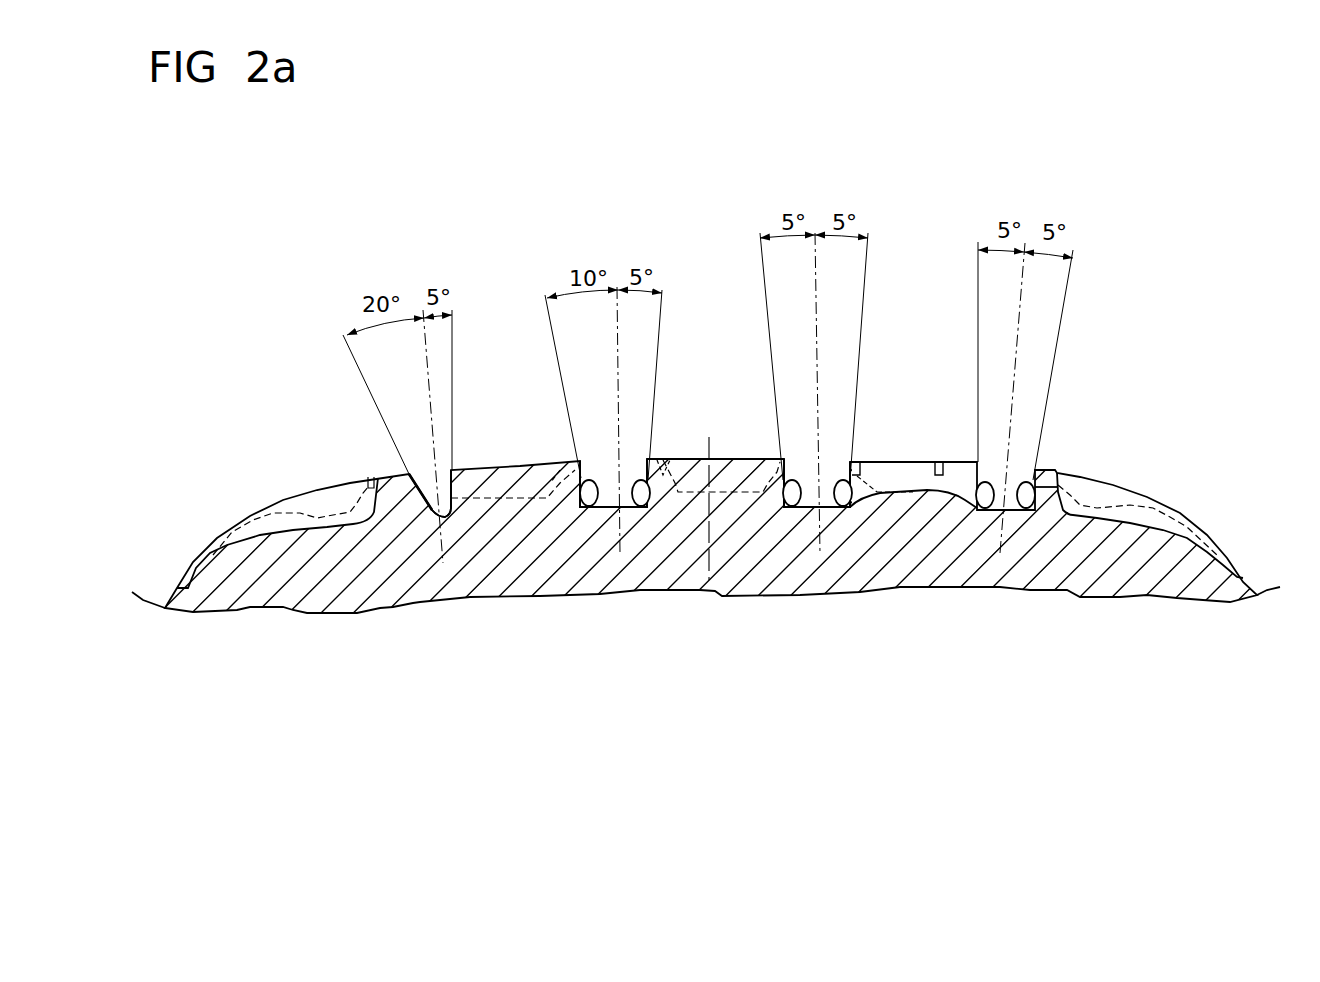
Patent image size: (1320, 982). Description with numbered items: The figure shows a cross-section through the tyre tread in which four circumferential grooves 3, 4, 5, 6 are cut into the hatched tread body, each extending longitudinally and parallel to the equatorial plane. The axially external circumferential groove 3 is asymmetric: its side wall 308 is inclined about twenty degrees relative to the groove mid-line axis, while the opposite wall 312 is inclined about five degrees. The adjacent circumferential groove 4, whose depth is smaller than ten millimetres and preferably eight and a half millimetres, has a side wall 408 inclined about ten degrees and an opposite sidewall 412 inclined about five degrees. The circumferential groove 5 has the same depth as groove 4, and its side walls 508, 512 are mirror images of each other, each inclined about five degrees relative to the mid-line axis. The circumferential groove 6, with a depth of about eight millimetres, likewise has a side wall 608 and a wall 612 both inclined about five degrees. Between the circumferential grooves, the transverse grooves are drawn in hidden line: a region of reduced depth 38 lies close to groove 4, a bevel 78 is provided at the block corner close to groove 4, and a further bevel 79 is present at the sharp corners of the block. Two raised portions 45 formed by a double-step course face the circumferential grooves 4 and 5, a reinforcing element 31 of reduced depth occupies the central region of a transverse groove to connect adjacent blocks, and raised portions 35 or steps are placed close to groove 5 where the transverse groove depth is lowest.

The circumferential groove 3 is at (423, 470).
The side wall 308 is at (413, 509).
The opposite wall 312 is at (451, 499).
The circumferential groove 4 is at (604, 474).
The side wall 408 is at (602, 508).
The opposite sidewall 412 is at (637, 508).
The circumferential groove 5 is at (807, 474).
The side wall 508 is at (803, 507).
The side wall 512 is at (838, 507).
The circumferential groove 6 is at (1017, 474).
The side wall 608 is at (988, 508).
The wall 612 is at (1017, 510).
The reinforcing element 31 is at (912, 490).
The raised portions 35 is at (852, 460).
The region of reduced depth 38 is at (555, 457).
The raised portions 45 is at (783, 470).
The bevel 78 is at (550, 483).
The bevel 79 is at (653, 458).